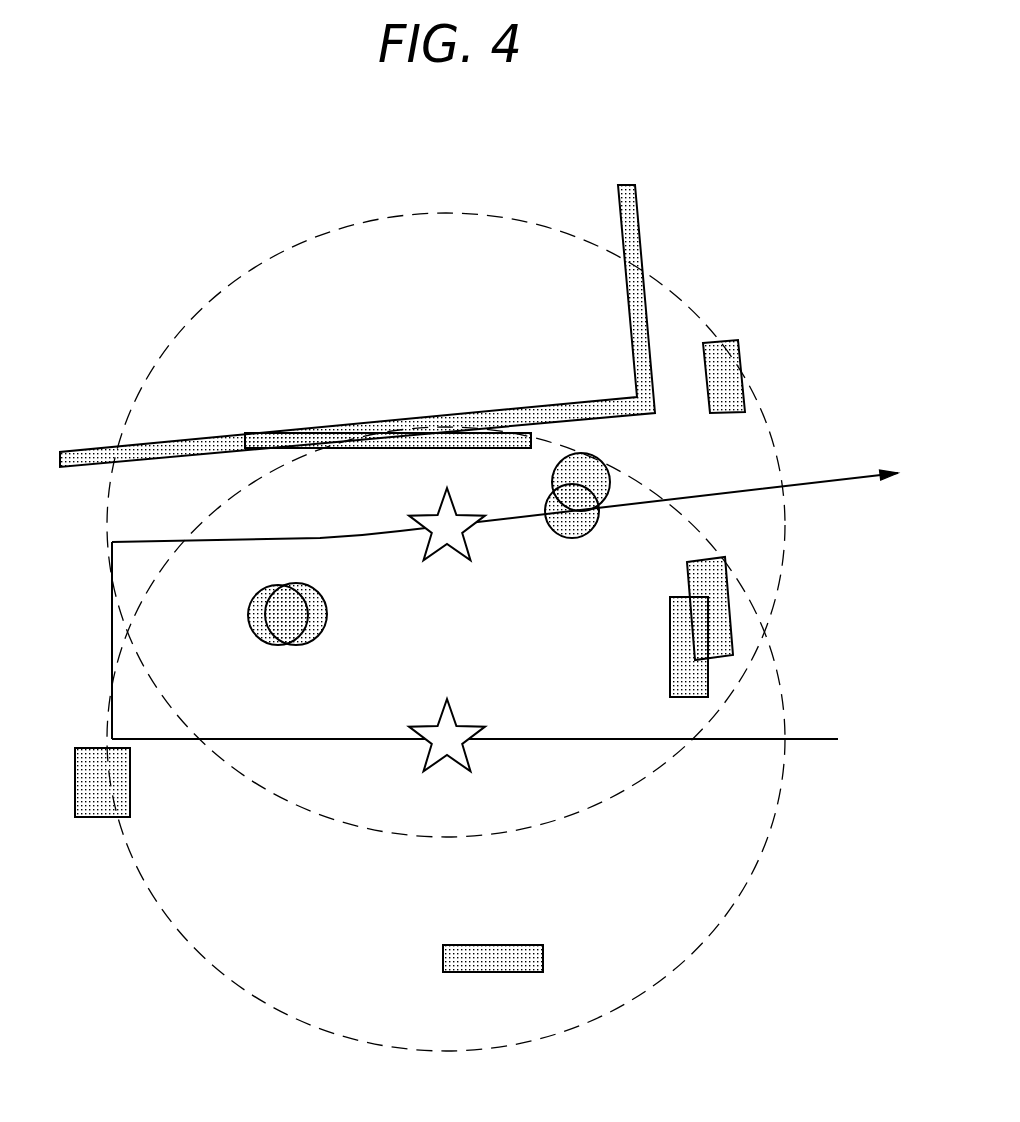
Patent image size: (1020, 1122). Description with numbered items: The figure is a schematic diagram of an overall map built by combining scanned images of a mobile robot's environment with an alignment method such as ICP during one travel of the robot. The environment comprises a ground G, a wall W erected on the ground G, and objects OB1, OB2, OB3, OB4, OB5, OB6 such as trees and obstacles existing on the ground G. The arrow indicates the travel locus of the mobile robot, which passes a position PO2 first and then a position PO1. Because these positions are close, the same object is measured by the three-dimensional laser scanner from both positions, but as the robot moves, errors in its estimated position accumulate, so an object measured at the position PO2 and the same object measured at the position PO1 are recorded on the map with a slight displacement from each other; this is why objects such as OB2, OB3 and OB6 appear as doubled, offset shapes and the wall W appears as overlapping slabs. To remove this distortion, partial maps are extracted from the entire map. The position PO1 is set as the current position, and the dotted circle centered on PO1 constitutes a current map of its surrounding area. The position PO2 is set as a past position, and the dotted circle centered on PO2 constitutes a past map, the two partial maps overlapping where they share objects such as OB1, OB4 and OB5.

The wall W is at (636, 206).
The ground G is at (824, 384).
The object OB1 is at (720, 347).
The object OB2 is at (600, 521).
The object OB3 is at (262, 643).
The object OB4 is at (100, 805).
The object OB5 is at (523, 953).
The object OB6 is at (702, 677).
The position PO1 is at (447, 542).
The position PO2 is at (447, 752).